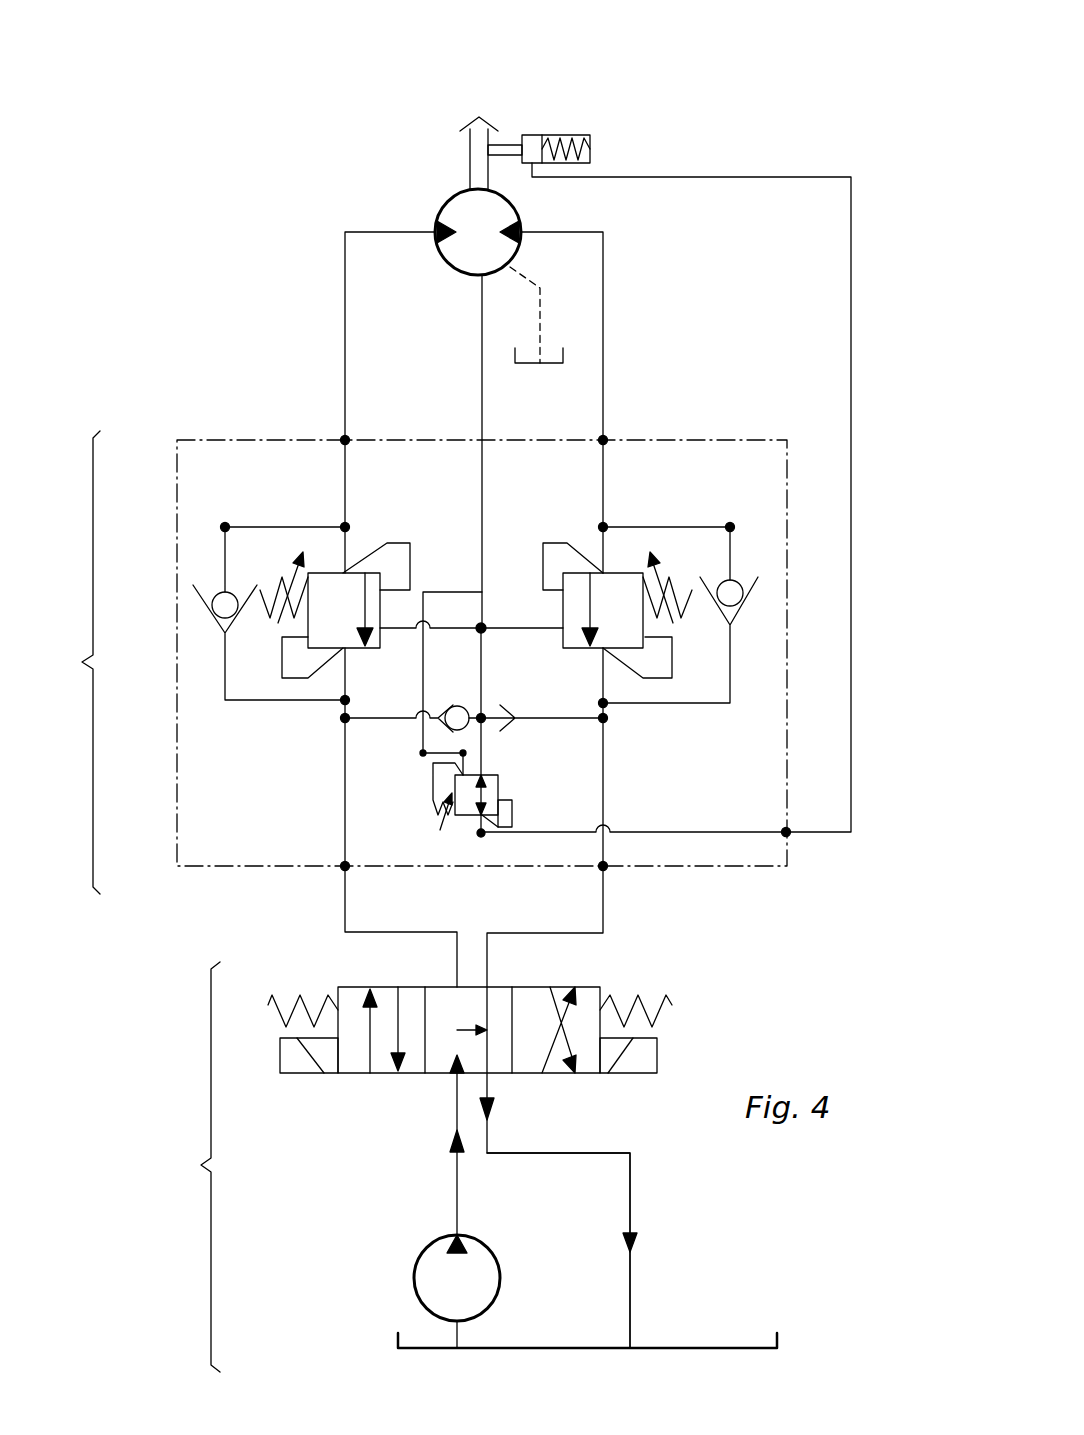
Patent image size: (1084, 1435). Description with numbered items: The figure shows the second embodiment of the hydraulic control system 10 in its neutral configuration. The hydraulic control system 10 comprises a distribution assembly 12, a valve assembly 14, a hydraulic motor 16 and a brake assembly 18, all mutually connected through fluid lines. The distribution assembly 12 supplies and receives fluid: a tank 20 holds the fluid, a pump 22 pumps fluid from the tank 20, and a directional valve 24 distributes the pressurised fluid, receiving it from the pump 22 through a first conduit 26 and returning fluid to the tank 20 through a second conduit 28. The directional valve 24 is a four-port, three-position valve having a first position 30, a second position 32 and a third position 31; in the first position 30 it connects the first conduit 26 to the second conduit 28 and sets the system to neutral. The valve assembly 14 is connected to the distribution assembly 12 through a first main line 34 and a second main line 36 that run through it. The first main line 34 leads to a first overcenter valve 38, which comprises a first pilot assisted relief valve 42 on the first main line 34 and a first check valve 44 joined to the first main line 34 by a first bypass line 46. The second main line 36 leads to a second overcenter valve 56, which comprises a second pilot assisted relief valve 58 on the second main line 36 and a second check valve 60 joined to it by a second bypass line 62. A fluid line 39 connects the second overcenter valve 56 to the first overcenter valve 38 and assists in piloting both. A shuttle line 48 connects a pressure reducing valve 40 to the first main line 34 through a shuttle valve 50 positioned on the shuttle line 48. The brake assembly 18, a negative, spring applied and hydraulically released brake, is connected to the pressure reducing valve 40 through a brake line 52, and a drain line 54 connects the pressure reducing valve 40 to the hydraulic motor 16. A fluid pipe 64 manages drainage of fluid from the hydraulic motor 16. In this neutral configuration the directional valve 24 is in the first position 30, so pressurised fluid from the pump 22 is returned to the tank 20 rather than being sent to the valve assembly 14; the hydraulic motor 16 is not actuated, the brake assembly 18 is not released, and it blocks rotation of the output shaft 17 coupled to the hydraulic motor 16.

The hydraulic control system 10 is at (181, 158).
The distribution assembly 12 is at (523, 1155).
The valve assembly 14 is at (442, 634).
The hydraulic motor 16 is at (428, 184).
The output shaft 17 is at (470, 155).
The brake assembly 18 is at (525, 115).
The tank 20 is at (778, 1345).
The pump 22 is at (414, 1270).
The directional valve 24 is at (536, 1039).
The first conduit 26 is at (455, 1203).
The second conduit 28 is at (632, 1191).
The first position 30 is at (438, 1075).
The third position 31 is at (553, 984).
The second position 32 is at (385, 984).
The first main line 34 is at (343, 316).
The second main line 36 is at (603, 345).
The first overcenter valve 38 is at (225, 497).
The fluid line 39 is at (505, 618).
The pressure reducing valve 40 is at (513, 818).
The first pilot assisted relief valve 42 is at (378, 650).
The first check valve 44 is at (215, 598).
The first bypass line 46 is at (285, 525).
The shuttle line 48 is at (547, 715).
The shuttle valve 50 is at (447, 708).
The brake line 52 is at (853, 239).
The drain line 54 is at (482, 350).
The second overcenter valve 56 is at (730, 497).
The second pilot assisted relief valve 58 is at (563, 608).
The second check valve 60 is at (756, 597).
The second bypass line 62 is at (660, 525).
The fluid pipe 64 is at (536, 262).